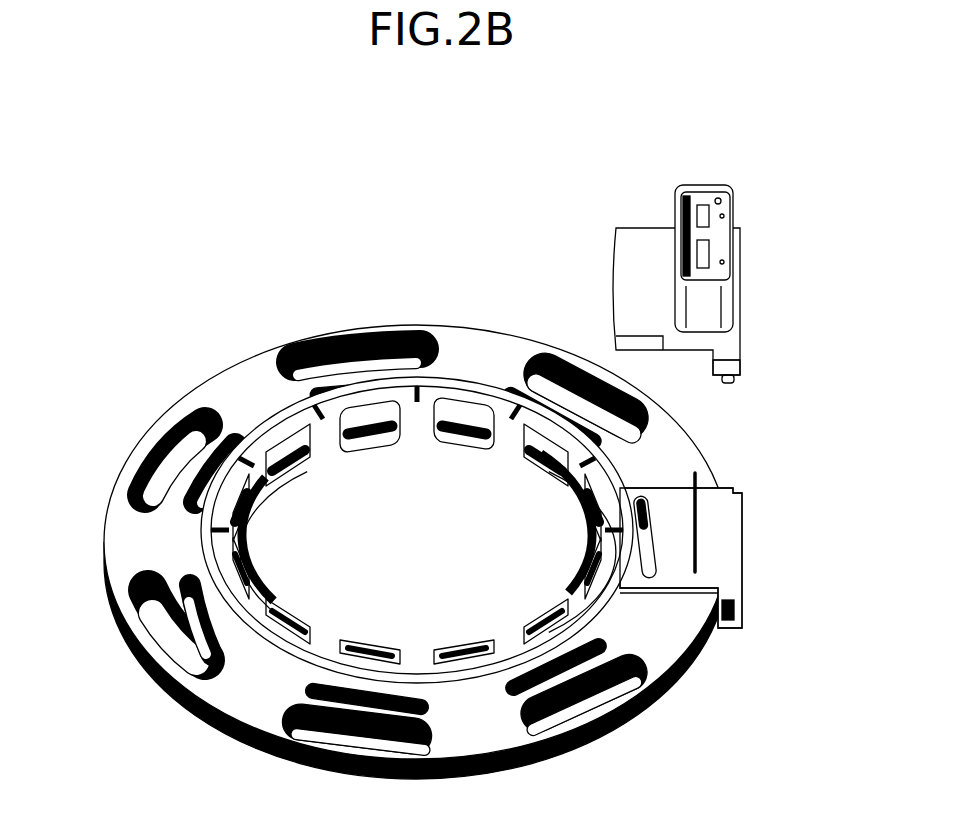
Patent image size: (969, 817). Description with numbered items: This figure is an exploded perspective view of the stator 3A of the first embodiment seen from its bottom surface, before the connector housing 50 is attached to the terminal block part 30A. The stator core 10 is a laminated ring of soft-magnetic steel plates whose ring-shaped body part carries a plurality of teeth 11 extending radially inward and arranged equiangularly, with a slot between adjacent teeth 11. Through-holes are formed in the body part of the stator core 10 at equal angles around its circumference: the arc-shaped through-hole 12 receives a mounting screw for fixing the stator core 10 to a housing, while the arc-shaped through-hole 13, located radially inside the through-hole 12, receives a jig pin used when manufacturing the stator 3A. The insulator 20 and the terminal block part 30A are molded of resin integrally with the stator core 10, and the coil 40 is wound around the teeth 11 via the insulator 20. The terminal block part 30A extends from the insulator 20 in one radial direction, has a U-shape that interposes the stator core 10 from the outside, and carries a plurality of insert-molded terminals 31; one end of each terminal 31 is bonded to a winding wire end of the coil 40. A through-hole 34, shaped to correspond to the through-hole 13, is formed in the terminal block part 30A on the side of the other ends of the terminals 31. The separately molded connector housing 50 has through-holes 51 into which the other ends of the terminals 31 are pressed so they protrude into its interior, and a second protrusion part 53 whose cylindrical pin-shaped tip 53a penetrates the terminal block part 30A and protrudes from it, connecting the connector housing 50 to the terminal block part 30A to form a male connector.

The stator 3A is at (382, 242).
The stator core 10 is at (130, 545).
The teeth 11 is at (520, 455).
The through-hole 12 is at (165, 460).
The through-hole 13 is at (190, 625).
The insulator 20 is at (383, 413).
The coil 40 is at (455, 392).
The terminal block part 30A is at (720, 560).
The terminals 31 is at (700, 488).
The through-hole 34 is at (648, 556).
The connector housing 50 is at (645, 238).
The through-holes 51 is at (700, 250).
The second protrusion part 53 is at (730, 372).
The tip 53a is at (735, 381).